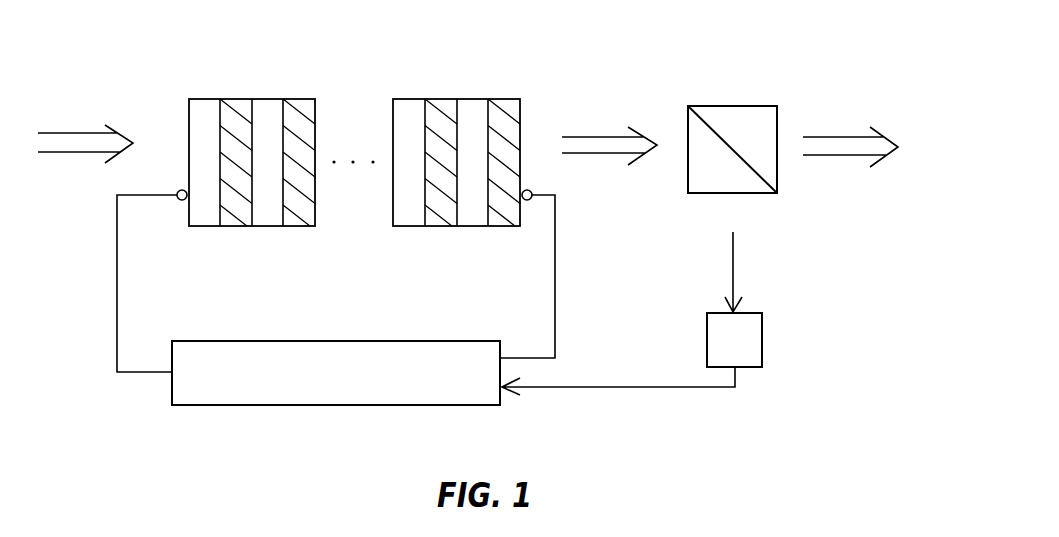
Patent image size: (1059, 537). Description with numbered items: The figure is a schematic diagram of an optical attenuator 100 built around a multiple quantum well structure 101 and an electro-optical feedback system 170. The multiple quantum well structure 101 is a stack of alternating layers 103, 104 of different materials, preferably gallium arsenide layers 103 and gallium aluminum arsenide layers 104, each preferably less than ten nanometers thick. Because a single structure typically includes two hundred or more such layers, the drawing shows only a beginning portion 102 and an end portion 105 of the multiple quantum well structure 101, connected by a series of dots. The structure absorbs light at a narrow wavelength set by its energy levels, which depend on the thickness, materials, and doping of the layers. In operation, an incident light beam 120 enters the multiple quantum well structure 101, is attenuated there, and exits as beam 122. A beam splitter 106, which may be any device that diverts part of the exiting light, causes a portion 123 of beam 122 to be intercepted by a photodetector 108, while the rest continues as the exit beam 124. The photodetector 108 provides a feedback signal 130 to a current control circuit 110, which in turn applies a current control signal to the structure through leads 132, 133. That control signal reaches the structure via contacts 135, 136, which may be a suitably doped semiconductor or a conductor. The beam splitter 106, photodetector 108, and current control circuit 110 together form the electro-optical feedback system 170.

The optical attenuator 100 is at (702, 62).
The multiple quantum well structure 101 is at (153, 103).
The beginning portion of the MQWS 102 is at (207, 98).
The layers 103 is at (407, 99).
The layers 104 is at (440, 99).
The end portion of the MQWS 105 is at (507, 99).
The beam splitter 106 is at (778, 173).
The photodetector 108 is at (762, 323).
The current control circuit 110 is at (220, 405).
The light beam 120 is at (68, 155).
The beam 122 is at (587, 155).
The portion of beam 123 is at (735, 253).
The exit beam 124 is at (830, 135).
The feedback signal 130 is at (660, 387).
The lead 132 is at (555, 287).
The lead 133 is at (117, 280).
The contact 135 is at (529, 201).
The contact 136 is at (181, 201).
The electro-optical feedback system 170 is at (778, 385).